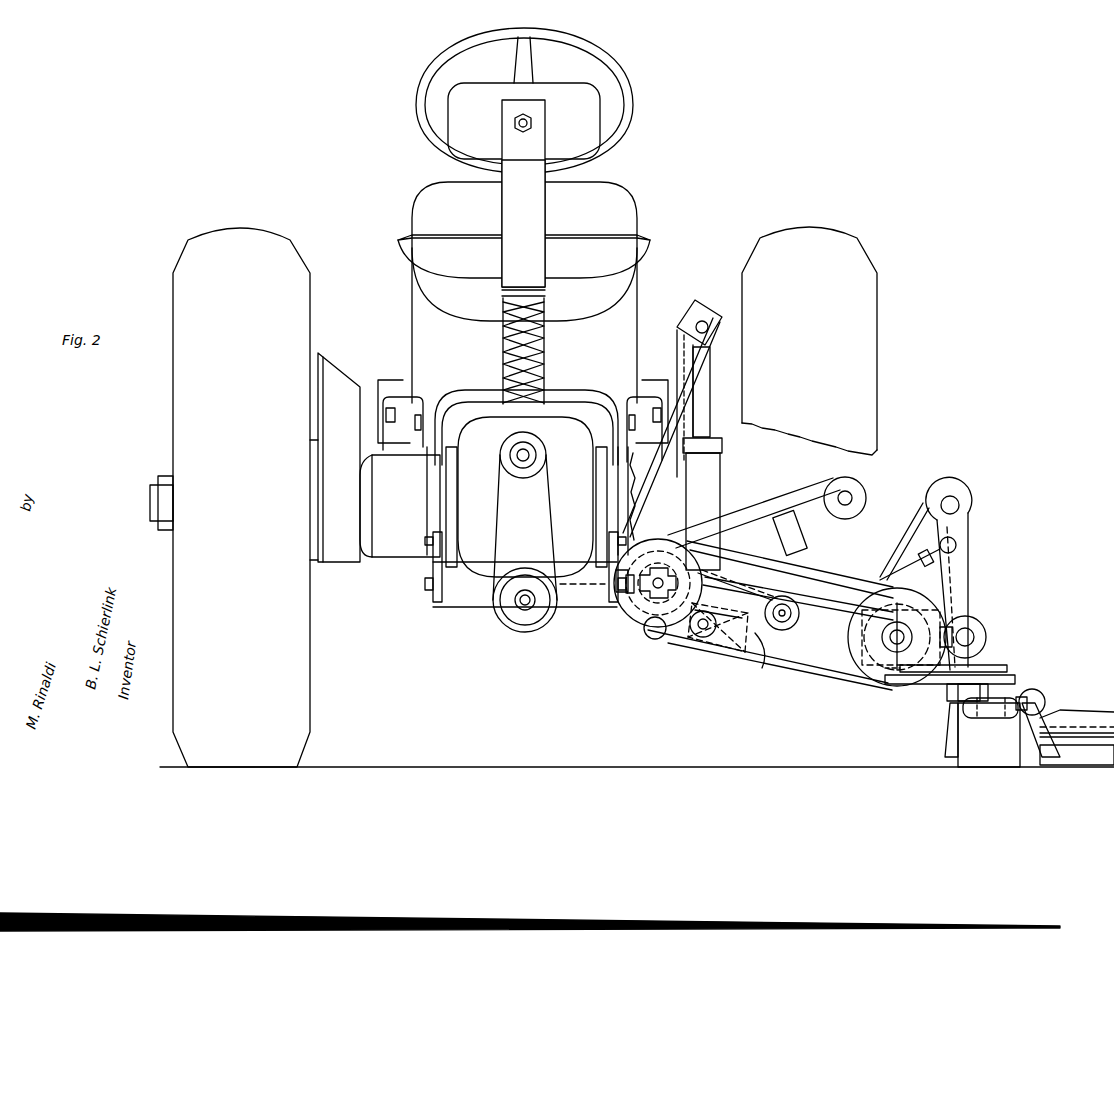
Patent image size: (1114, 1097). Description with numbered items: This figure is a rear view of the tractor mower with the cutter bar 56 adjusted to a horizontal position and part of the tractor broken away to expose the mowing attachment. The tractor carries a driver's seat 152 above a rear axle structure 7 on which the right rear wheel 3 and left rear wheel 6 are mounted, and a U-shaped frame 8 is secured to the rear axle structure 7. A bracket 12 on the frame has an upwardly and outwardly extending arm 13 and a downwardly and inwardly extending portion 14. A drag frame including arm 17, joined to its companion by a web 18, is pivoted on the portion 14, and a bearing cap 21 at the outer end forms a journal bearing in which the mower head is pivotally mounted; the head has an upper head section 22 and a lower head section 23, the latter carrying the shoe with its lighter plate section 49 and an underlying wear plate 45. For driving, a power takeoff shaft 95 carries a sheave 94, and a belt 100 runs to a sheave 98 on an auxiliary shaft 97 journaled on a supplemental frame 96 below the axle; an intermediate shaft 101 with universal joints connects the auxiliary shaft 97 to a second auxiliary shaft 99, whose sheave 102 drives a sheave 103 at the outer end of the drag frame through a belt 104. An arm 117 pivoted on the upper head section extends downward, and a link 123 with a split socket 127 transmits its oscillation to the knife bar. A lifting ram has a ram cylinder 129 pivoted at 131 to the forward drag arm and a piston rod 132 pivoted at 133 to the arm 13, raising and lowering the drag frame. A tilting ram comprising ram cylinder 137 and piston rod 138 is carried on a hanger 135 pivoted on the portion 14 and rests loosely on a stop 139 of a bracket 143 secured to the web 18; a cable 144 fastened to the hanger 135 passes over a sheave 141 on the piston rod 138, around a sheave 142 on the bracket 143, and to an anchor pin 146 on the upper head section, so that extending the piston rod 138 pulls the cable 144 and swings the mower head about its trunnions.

The right rear wheel 3 is at (872, 266).
The left rear wheel 6 is at (190, 262).
The rear axle structure 7 is at (382, 553).
The U-shaped frame 8 is at (390, 380).
The bracket 12 is at (678, 426).
The upwardly and outwardly extending arm 13 is at (688, 315).
The downwardly and inwardly extending portion 14 is at (660, 486).
The drag frame arm 17 is at (826, 605).
The web 18 is at (744, 645).
The bearing cap 21 is at (918, 600).
The upper head section 22 is at (970, 566).
The lower head section 23 is at (928, 688).
The wear plate 45 is at (989, 735).
The lighter plate section 49 is at (946, 738).
The cutter bar 56 is at (1085, 738).
The sheave 94 is at (500, 455).
The power takeoff shaft 95 is at (536, 455).
The supplemental frame 96 is at (470, 607).
The auxiliary shaft 97 is at (520, 608).
The sheave 98 is at (542, 620).
The second auxiliary shaft 99 is at (663, 540).
The belt 100 is at (500, 507).
The intermediate shaft 101 is at (582, 600).
The sheave 102 is at (622, 608).
The sheave 103 is at (876, 680).
The belt 104 is at (823, 672).
The arm 117 is at (976, 625).
The link 123 is at (990, 716).
The split socket 127 is at (1046, 700).
The ram cylinder 129 is at (722, 478).
The pivotal connection 131 is at (703, 637).
The piston rod 132 is at (706, 374).
The pivotal connection 133 is at (708, 318).
The hanger 135 is at (656, 639).
The ram cylinder 137 is at (758, 538).
The piston rod 138 is at (802, 514).
The stop 139 is at (772, 598).
The sheave 141 is at (864, 500).
The sheave 142 is at (789, 622).
The bracket 143 is at (765, 660).
The cable 144 is at (830, 544).
The anchor pin 146 is at (942, 543).
The driver's seat 152 is at (634, 244).